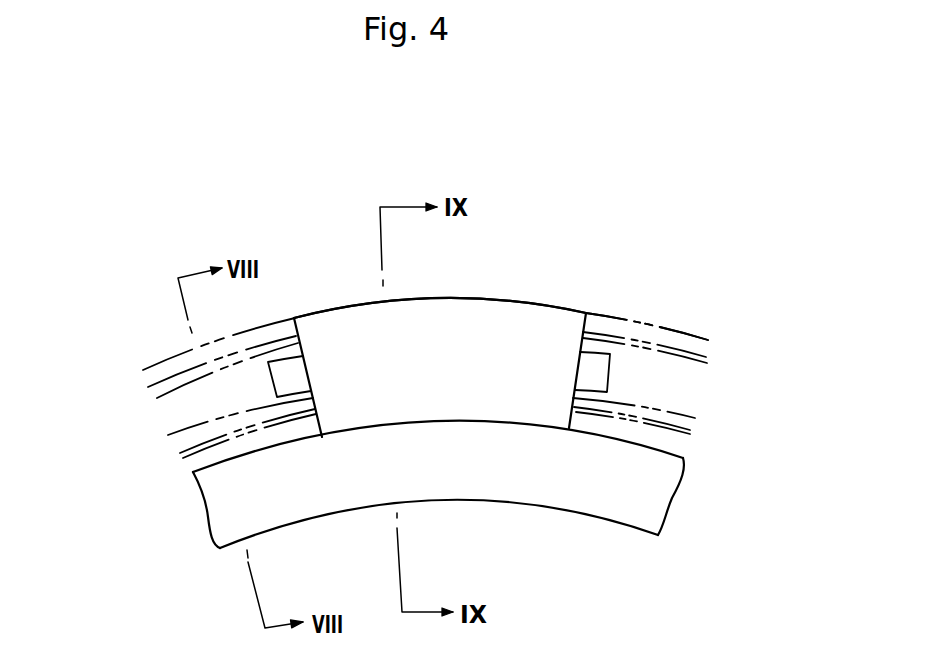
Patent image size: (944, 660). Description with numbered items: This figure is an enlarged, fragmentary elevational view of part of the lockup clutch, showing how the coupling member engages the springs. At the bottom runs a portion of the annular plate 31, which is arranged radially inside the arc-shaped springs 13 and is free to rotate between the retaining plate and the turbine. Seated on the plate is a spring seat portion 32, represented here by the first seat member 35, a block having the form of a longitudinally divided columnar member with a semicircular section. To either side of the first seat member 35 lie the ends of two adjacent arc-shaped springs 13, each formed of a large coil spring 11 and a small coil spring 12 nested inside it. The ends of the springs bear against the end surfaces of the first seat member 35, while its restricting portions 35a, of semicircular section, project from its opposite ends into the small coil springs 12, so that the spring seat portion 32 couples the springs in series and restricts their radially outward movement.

The large coil spring 11 is at (683, 330).
The small coil spring 12 is at (708, 338).
The arc-shaped spring 13 is at (802, 237).
The annular plate 31 is at (625, 433).
The spring seat portion 32 is at (493, 264).
The first seat member 35 is at (470, 345).
The restricting portion 35a is at (285, 373).